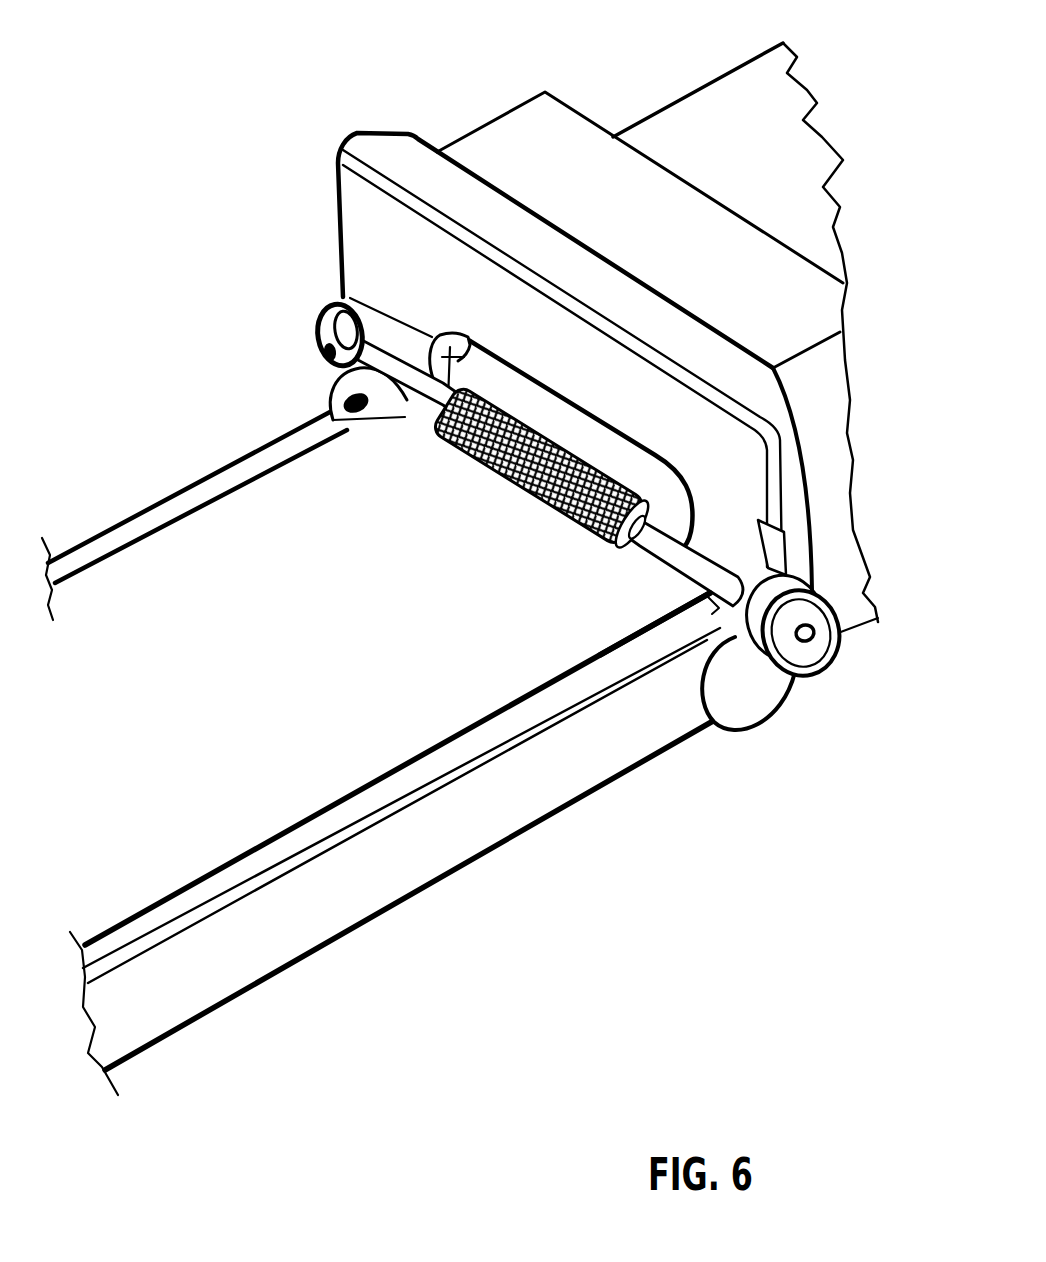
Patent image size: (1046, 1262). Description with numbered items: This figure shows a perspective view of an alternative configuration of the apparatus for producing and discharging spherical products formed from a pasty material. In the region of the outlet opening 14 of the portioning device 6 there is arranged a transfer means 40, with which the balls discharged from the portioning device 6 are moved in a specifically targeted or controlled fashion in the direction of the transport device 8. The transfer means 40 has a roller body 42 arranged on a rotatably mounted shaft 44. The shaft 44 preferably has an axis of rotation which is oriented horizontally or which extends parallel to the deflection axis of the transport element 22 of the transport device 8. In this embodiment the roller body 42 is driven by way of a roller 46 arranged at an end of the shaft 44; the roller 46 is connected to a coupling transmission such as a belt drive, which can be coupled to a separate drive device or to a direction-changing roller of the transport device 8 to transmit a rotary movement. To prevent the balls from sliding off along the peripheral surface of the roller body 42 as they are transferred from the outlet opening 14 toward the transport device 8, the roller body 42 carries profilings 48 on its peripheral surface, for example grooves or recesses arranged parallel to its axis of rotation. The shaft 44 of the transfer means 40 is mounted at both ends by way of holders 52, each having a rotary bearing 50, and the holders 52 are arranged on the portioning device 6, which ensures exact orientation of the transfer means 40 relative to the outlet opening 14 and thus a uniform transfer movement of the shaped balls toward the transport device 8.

The portioning device 6 is at (407, 115).
The transport device 8 is at (430, 932).
The outlet opening 14 is at (423, 337).
The transport element 22 is at (257, 808).
The transfer means 40 is at (633, 594).
The roller body 42 is at (437, 420).
The shaft 44 is at (700, 612).
The roller 46 is at (793, 653).
The profilings 48 is at (481, 473).
The rotary bearing 50 is at (333, 372).
The holders 52 is at (323, 320).